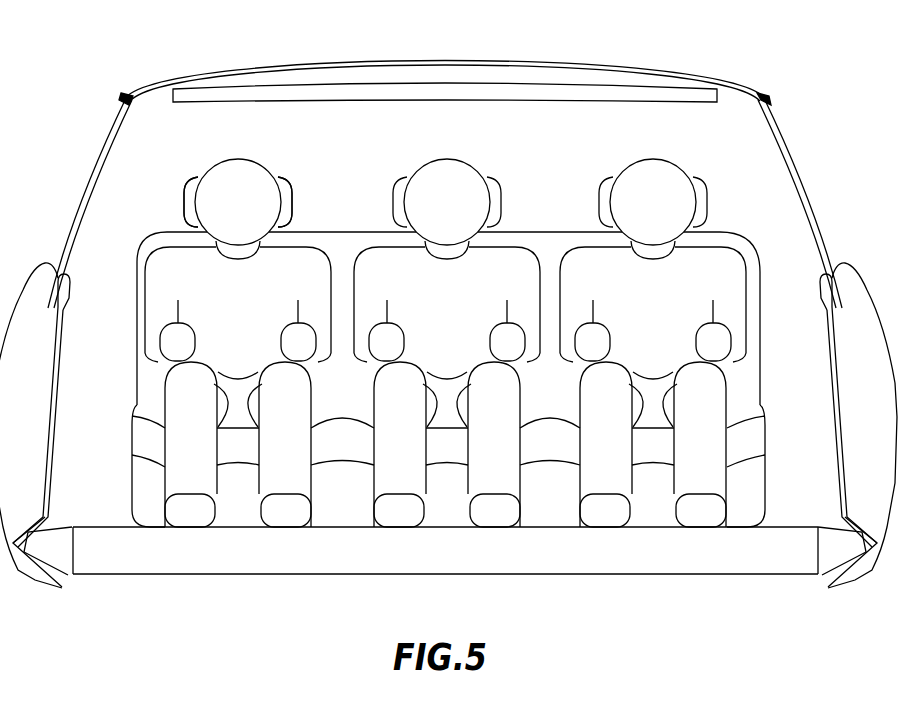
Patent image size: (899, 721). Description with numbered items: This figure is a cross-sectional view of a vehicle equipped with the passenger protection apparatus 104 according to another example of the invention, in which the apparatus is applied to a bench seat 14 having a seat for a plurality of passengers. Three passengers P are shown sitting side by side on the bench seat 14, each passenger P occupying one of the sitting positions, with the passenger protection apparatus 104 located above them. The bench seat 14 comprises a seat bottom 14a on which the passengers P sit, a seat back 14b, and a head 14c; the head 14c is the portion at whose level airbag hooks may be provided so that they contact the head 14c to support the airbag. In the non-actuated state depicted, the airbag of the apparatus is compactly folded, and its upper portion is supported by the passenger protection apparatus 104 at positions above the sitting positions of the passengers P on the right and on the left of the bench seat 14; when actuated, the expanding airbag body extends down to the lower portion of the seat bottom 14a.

The passenger protection apparatus 104 is at (443, 93).
The bench seat 14 is at (415, 352).
The seat bottom 14a is at (142, 389).
The seat back 14b is at (138, 337).
The head 14c is at (193, 216).
The passenger P is at (264, 158).